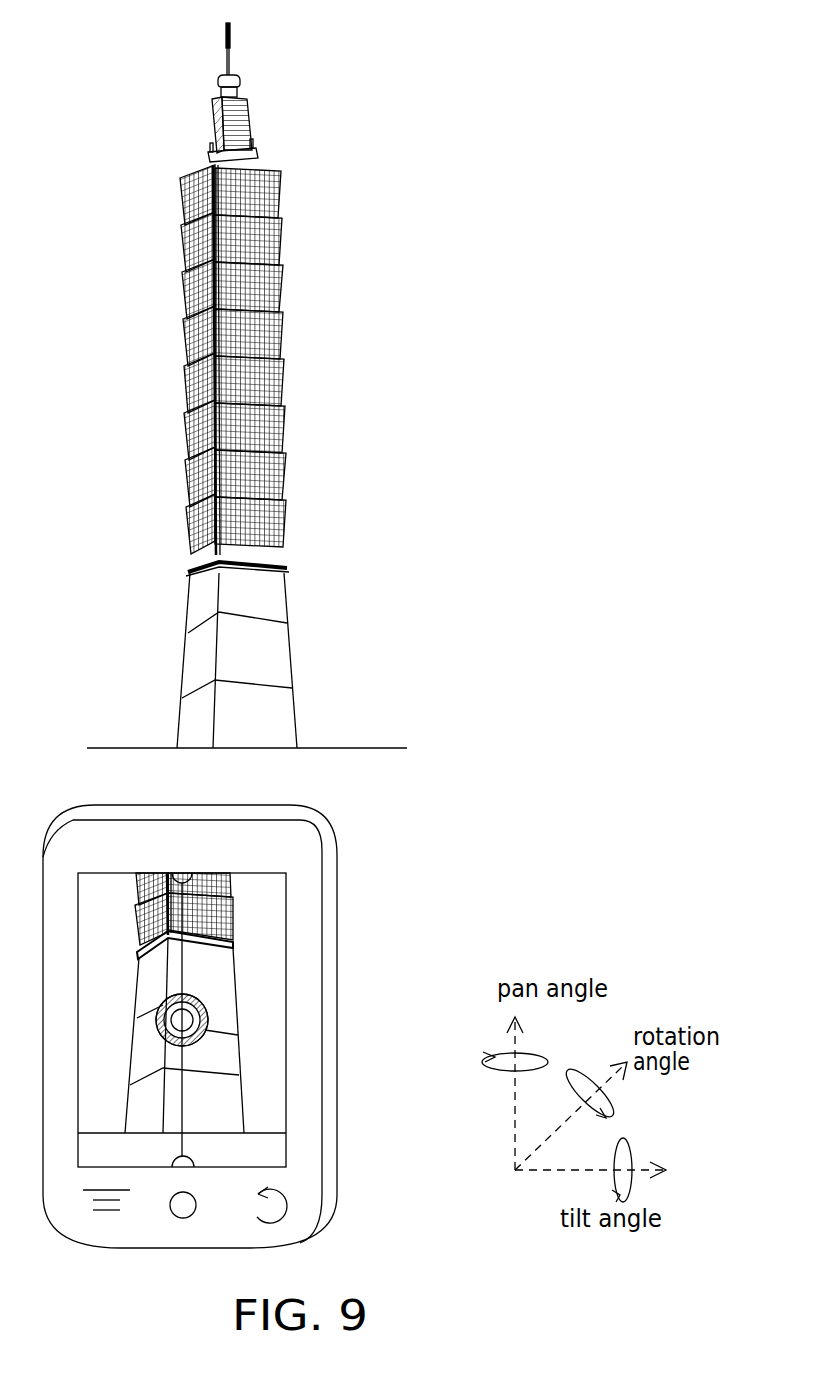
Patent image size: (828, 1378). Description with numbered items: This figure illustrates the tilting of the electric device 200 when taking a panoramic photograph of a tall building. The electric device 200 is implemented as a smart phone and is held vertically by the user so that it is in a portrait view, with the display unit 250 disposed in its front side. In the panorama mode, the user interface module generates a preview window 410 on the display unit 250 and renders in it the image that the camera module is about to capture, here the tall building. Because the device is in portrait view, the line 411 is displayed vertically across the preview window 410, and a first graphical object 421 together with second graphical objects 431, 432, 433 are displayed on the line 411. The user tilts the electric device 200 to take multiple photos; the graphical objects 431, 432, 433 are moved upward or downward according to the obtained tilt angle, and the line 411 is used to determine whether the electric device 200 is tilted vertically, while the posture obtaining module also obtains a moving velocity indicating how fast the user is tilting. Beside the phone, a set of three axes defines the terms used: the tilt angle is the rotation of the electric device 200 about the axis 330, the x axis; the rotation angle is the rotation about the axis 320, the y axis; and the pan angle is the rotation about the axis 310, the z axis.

The electric device 200 is at (323, 1125).
The display unit 250 is at (287, 1060).
The axis 310 is at (513, 1106).
The axis 320 is at (577, 1108).
The axis 330 is at (586, 1168).
The preview window 410 is at (258, 915).
The line 411 is at (183, 1098).
The graphical object 421 is at (208, 1003).
The graphical object 431 is at (194, 1163).
The graphical object 432 is at (208, 1022).
The graphical object 433 is at (150, 873).